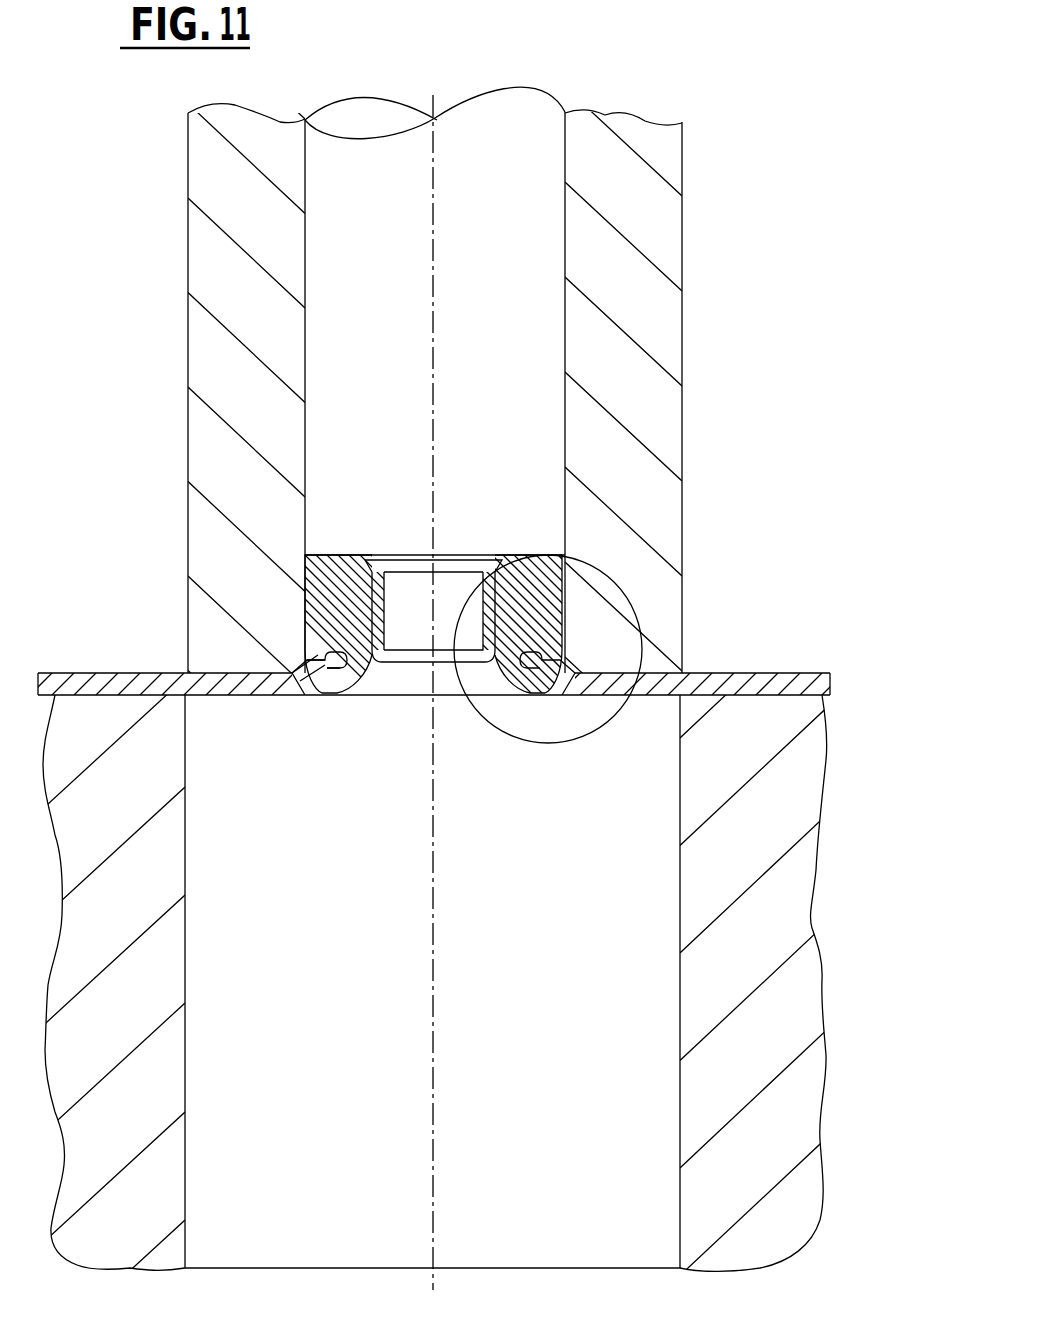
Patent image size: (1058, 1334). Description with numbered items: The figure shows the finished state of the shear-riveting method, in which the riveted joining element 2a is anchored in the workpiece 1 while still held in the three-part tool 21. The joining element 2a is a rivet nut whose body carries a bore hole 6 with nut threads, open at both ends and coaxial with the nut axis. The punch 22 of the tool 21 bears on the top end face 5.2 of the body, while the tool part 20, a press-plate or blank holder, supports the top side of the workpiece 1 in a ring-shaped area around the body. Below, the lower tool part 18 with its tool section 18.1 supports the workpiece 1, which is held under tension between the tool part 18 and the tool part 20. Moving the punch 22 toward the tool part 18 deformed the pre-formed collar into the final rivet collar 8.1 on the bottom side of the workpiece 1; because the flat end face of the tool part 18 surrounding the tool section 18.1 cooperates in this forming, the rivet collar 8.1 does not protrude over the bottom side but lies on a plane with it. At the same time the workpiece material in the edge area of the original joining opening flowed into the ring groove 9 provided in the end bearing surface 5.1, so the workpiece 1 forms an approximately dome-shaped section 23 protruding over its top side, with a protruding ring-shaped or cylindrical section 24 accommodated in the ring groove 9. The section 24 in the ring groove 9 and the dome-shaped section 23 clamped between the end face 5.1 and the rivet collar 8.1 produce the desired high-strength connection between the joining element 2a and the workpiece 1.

The workpiece 1 is at (750, 683).
The joining element 2a is at (578, 601).
The end bearing surface 5.1 is at (555, 660).
The end face 5.2 is at (527, 555).
The bore hole 6 is at (386, 595).
The rivet collar 8.1 is at (337, 693).
The ring groove 9 is at (200, 571).
The tool part 18 is at (647, 978).
The tool section 18.1 is at (438, 693).
The tool part 20 is at (655, 415).
The tool 21 is at (703, 310).
The punch 22 is at (513, 193).
The dome-shaped section 23 is at (297, 680).
The cylindrical section 24 is at (345, 680).